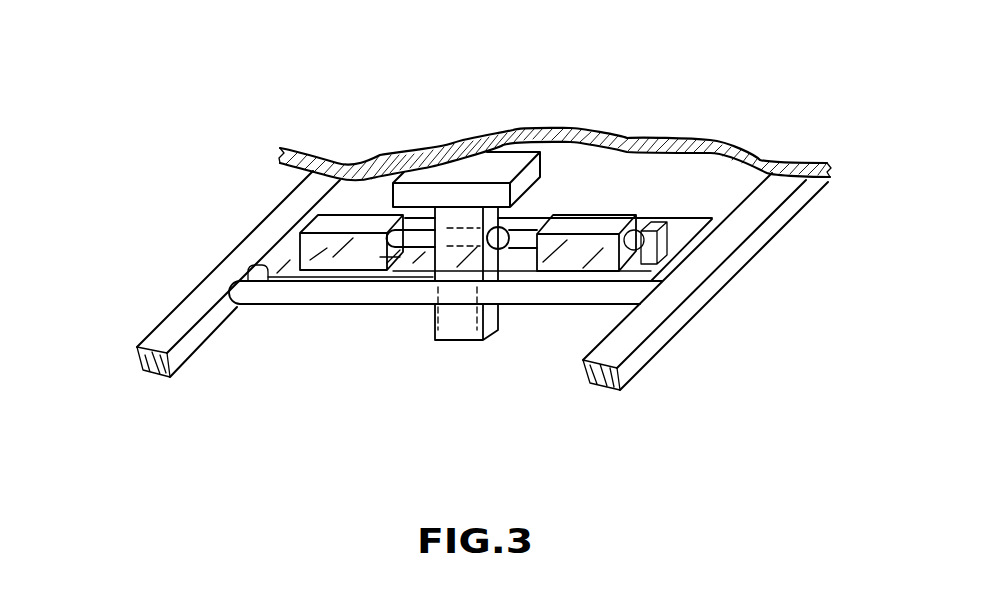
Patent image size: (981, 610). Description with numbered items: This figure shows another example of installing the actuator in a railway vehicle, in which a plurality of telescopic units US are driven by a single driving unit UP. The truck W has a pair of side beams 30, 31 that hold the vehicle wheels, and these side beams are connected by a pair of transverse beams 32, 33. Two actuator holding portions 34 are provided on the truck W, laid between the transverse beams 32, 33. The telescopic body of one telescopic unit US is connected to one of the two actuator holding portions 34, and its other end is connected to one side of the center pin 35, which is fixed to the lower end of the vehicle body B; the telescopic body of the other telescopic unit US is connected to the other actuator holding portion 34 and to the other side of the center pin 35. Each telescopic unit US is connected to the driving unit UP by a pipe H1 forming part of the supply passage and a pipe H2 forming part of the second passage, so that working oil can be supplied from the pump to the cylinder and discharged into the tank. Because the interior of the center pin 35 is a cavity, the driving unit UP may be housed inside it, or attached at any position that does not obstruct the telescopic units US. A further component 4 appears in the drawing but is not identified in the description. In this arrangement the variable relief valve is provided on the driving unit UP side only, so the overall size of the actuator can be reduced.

The vehicle body B is at (675, 127).
The truck W is at (165, 311).
The side beam 30 is at (223, 262).
The side beam 31 is at (703, 290).
The transverse beam 32 is at (633, 293).
The transverse beam 33 is at (715, 221).
The actuator holding portion 34 is at (252, 297).
The center pin 35 is at (452, 220).
The rod 4 is at (413, 237).
The telescopic unit US is at (293, 220).
The pipe H1 is at (352, 267).
The pipe H2 is at (325, 267).
The driving unit UP is at (435, 340).